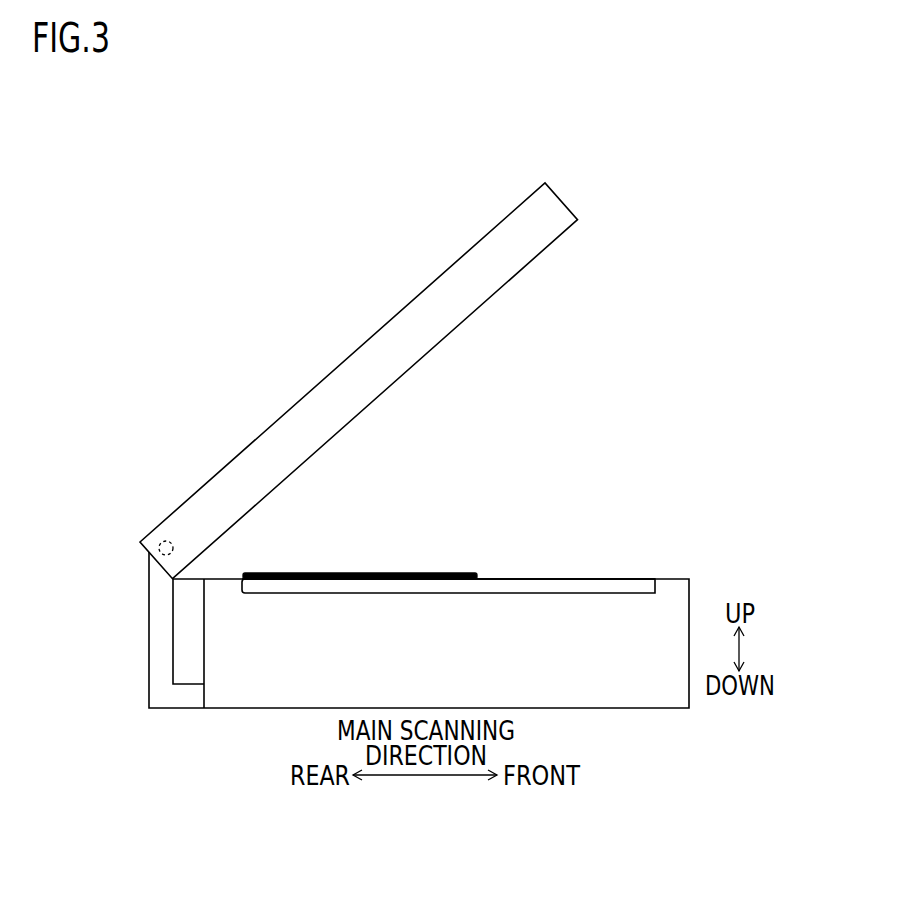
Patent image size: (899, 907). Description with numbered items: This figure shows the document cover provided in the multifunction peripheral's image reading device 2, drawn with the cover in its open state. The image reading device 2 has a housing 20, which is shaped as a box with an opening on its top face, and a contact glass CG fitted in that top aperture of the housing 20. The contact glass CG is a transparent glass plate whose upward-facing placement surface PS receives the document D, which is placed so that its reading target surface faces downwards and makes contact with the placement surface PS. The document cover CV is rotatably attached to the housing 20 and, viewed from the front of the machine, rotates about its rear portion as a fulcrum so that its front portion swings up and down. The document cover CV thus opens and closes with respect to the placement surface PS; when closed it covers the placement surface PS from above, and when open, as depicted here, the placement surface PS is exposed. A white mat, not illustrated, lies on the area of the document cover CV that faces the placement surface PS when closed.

The image reading device 2 is at (653, 478).
The housing 20 is at (667, 585).
The document cover CV is at (318, 392).
The contact glass CG is at (492, 587).
The placement surface PS is at (562, 579).
The document D is at (377, 573).